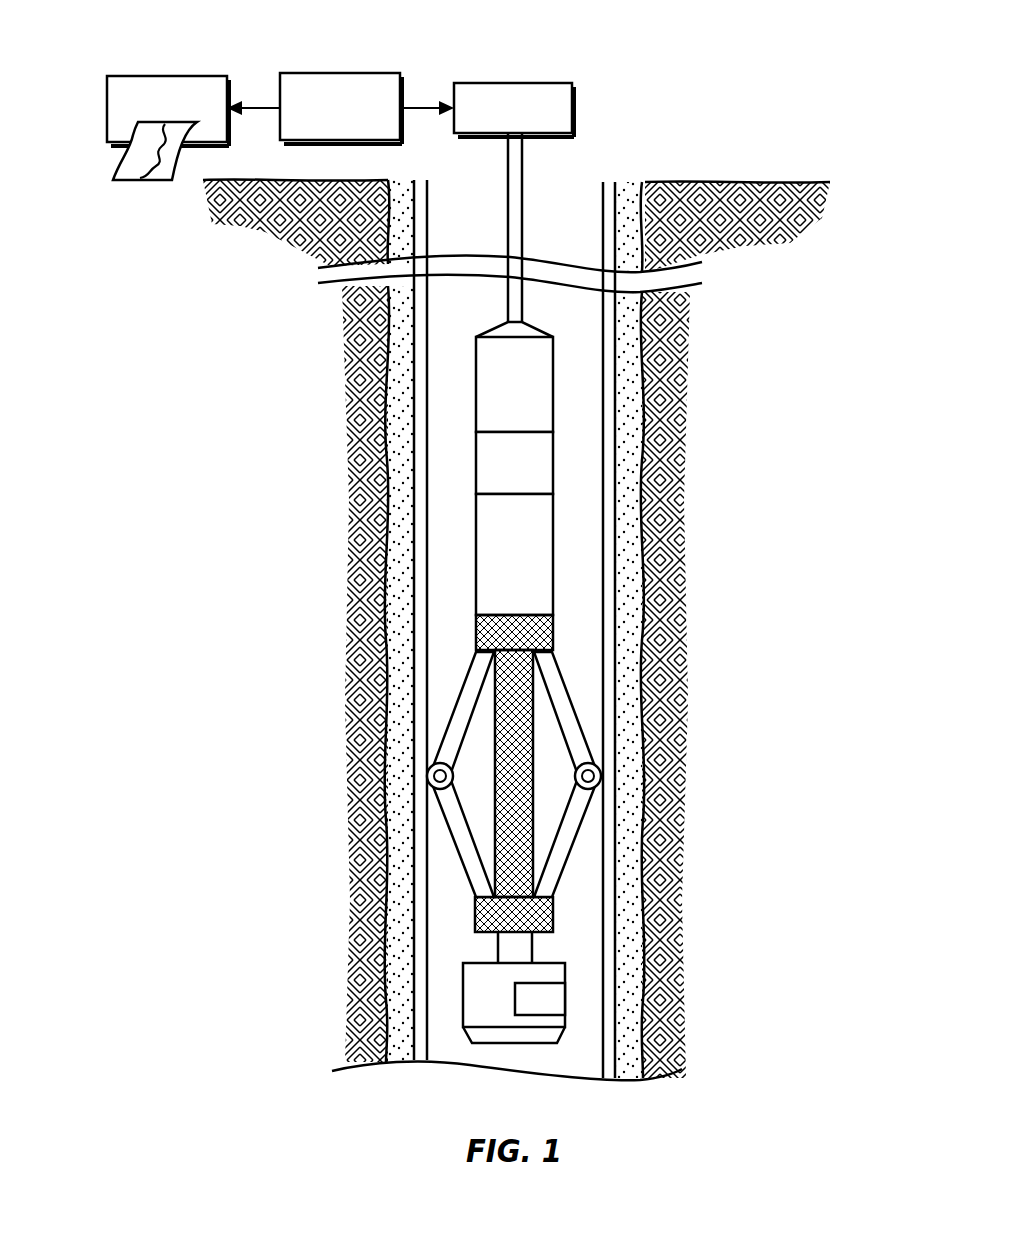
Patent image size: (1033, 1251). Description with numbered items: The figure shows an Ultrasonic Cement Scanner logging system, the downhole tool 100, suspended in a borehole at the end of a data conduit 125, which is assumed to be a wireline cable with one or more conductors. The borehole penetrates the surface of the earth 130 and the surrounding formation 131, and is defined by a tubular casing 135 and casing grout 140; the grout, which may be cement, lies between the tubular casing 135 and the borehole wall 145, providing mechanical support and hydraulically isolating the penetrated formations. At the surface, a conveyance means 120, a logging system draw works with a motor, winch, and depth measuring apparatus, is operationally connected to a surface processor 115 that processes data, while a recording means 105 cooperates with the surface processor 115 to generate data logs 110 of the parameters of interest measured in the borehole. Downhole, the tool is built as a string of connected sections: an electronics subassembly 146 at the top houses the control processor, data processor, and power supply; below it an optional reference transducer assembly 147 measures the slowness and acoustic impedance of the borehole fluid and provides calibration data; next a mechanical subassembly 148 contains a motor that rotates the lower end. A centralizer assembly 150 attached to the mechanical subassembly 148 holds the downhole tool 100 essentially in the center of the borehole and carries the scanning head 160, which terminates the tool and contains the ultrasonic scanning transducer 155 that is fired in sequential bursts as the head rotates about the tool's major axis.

The downhole tool 100 is at (647, 55).
The recording means 105 is at (150, 76).
The data logs 110 is at (135, 180).
The surface processor 115 is at (340, 73).
The conveyance means 120 is at (515, 83).
The data conduit 125 is at (523, 172).
The surface of the earth 130 is at (718, 183).
The near-surface formation 131 is at (516, 226).
The tubular casing 135 is at (617, 392).
The casing grout 140 is at (632, 425).
The borehole wall 145 is at (665, 460).
The electronics subassembly 146 is at (476, 386).
The reference transducer assembly 147 is at (476, 463).
The mechanical subassembly 148 is at (476, 550).
The centralizer assembly 150 is at (533, 740).
The scanning transducer 155 is at (565, 1000).
The scanning head 160 is at (565, 977).